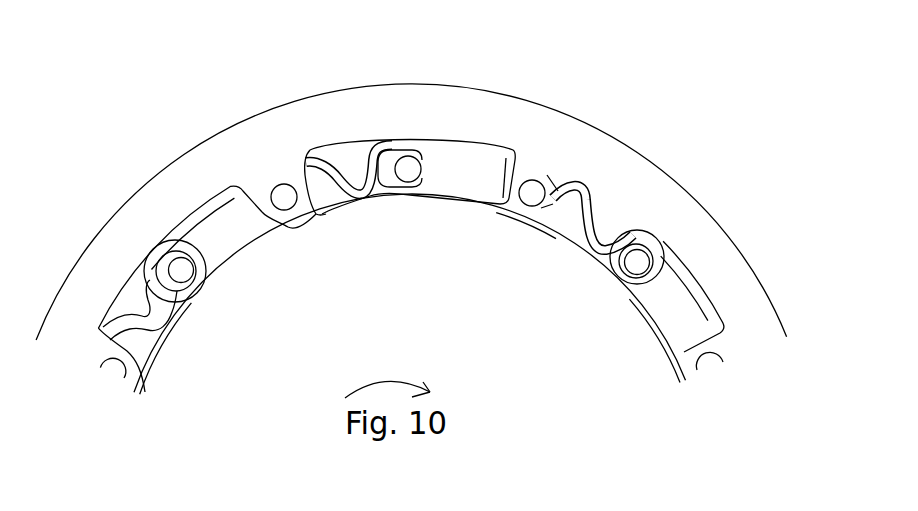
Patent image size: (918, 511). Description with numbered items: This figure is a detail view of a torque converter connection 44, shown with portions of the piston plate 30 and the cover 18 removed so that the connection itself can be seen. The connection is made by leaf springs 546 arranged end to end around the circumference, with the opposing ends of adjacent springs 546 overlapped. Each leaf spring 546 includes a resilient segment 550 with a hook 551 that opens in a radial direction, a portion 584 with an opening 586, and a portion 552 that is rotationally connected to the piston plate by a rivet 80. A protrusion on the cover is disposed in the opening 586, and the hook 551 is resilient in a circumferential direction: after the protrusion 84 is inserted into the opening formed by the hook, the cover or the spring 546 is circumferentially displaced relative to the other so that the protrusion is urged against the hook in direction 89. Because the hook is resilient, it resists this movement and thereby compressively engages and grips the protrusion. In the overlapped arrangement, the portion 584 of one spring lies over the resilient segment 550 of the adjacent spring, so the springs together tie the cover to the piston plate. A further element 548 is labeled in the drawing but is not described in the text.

The cover 18 is at (268, 318).
The piston plate 30 is at (187, 172).
The torque converter connection 44 is at (599, 120).
The rivet 80 is at (533, 192).
The protrusion 84 is at (408, 169).
The direction 89 is at (398, 373).
The leaf spring 546 is at (463, 185).
The spring portion 548 is at (242, 210).
The resilient segment 550 is at (653, 219).
The hook 551 is at (658, 240).
The portion 552 is at (526, 257).
The portion 584 is at (436, 148).
The opening 586 is at (408, 169).